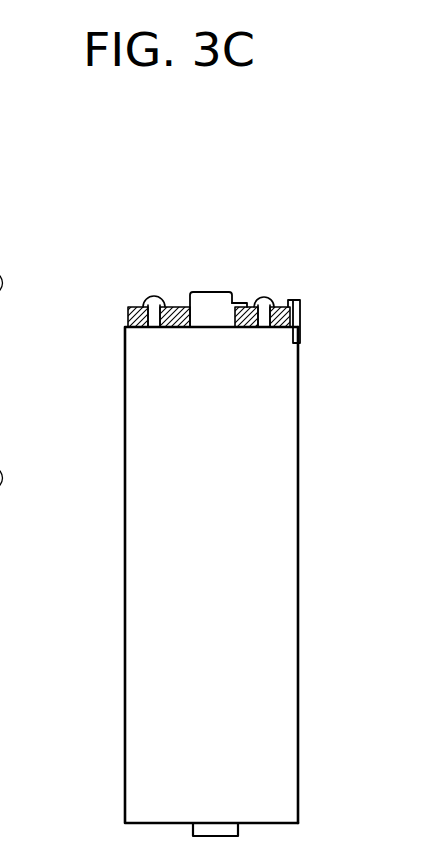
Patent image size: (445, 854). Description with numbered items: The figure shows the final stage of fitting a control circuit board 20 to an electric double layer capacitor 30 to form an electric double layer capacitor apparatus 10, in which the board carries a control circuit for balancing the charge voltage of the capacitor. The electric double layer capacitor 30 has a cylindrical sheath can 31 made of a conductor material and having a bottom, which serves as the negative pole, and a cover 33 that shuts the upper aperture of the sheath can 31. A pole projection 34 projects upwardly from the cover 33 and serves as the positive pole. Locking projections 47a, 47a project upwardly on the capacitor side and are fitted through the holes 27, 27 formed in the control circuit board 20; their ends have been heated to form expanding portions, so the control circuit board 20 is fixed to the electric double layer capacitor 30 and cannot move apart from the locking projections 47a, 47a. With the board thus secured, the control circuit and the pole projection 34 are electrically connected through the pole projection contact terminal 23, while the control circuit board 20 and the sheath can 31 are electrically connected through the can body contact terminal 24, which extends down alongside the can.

The electric double layer capacitor apparatus 10 is at (201, 197).
The control circuit board 20 is at (318, 302).
The pole projection contact terminal 23 is at (246, 298).
The can body contact terminal 24 is at (301, 335).
The holes 27 is at (153, 310).
The electric double layer capacitor 30 is at (303, 465).
The sheath can 31 is at (303, 566).
The cover 33 is at (117, 292).
The pole projection 34 is at (210, 292).
The locking projections 47a is at (153, 293).